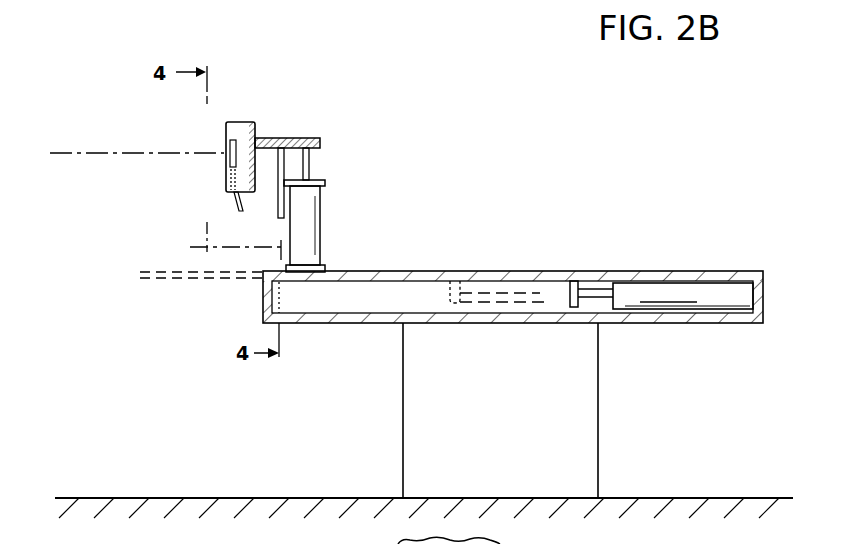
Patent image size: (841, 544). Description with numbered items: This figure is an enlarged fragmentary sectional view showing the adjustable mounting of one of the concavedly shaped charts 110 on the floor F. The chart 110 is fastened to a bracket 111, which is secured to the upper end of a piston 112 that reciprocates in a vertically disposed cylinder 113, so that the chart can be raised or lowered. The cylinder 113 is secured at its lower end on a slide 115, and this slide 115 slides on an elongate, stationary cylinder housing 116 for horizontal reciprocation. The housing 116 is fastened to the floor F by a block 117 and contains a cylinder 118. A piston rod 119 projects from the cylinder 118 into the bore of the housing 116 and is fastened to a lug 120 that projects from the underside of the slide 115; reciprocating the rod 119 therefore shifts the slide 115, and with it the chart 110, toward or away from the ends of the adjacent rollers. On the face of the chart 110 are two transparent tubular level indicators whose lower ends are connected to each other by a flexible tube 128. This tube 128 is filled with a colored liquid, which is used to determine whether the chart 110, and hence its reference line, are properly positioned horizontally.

The chart 110 is at (255, 128).
The bracket 111 is at (306, 139).
The piston 112 is at (310, 164).
The cylinder 113 is at (320, 233).
The slide 115 is at (503, 271).
The cylinder housing 116 is at (358, 317).
The block 117 is at (599, 401).
The cylinder 118 is at (720, 285).
The piston rod 119 is at (600, 290).
The lug 120 is at (571, 280).
The flexible tube 128 is at (235, 198).
The floor F is at (278, 497).